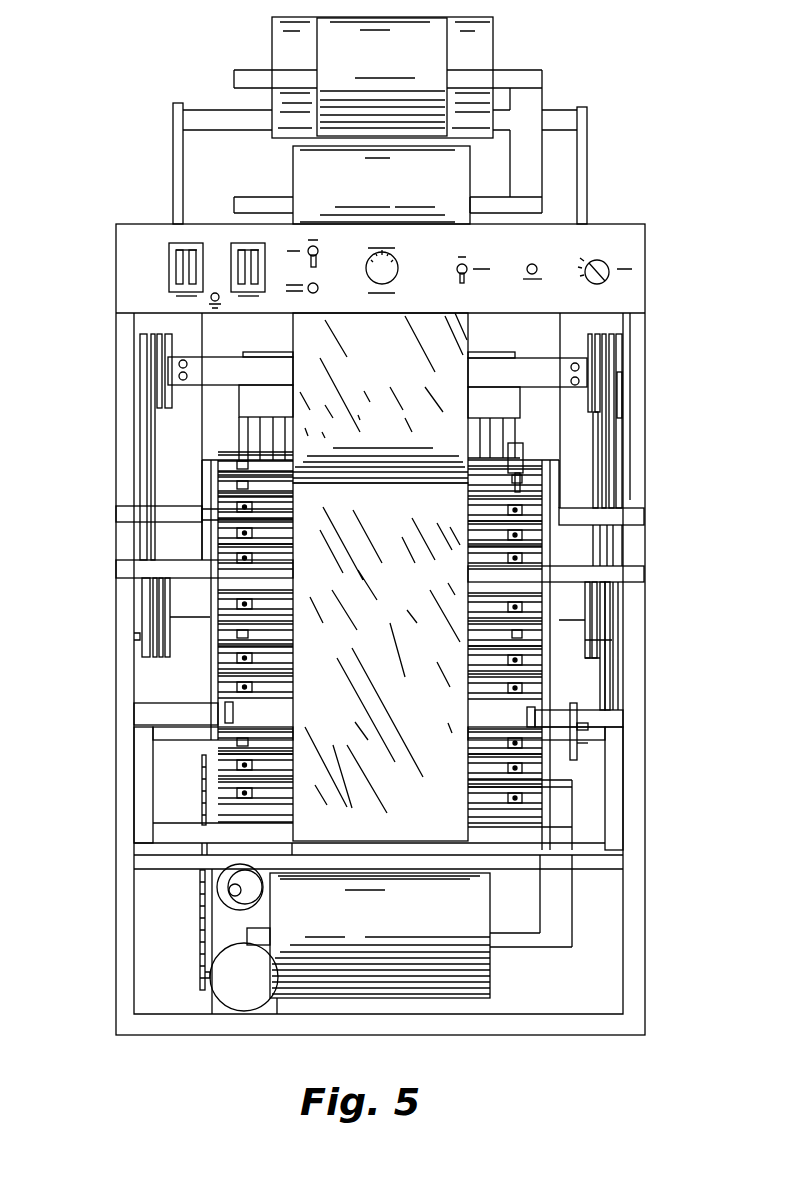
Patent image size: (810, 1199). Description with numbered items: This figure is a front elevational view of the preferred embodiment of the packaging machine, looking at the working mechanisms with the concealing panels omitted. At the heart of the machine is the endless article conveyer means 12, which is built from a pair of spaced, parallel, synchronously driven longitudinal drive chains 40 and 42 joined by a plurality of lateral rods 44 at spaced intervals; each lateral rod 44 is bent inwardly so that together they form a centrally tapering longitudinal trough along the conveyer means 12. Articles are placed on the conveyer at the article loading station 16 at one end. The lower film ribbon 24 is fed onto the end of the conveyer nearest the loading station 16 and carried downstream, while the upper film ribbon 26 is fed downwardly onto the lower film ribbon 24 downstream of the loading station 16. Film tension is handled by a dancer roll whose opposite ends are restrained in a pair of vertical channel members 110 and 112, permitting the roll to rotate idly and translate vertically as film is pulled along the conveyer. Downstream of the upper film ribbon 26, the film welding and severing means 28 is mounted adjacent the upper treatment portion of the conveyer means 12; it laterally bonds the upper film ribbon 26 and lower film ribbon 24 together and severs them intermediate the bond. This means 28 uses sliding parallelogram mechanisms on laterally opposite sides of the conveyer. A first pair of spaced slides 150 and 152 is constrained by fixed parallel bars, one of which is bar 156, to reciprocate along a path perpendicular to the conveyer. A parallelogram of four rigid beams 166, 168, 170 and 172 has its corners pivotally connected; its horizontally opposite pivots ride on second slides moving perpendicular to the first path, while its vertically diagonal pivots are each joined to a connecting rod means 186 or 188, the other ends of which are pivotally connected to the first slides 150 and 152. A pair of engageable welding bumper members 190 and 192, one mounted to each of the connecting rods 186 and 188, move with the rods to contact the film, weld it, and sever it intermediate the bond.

The endless article conveyer means 12 is at (223, 635).
The article loading station 16 is at (657, 297).
The lower film ribbon 24 is at (422, 808).
The upper film ribbon 26 is at (390, 372).
The film welding and severing means 28 is at (553, 372).
The longitudinal drive chain 40 is at (545, 690).
The longitudinal drive chain 42 is at (217, 748).
The lateral rods 44 is at (223, 672).
The vertical channel member 110 is at (143, 798).
The vertical channel member 112 is at (613, 797).
The first slide 150 is at (620, 392).
The first slide 152 is at (618, 602).
The fixed parallel bar 156 is at (613, 445).
The beam 166 is at (602, 428).
The beam 168 is at (600, 592).
The beam 170 is at (597, 627).
The beam 172 is at (595, 477).
The connecting rod means 186 is at (590, 367).
The connecting rod means 188 is at (587, 638).
The welding bumper member 190 is at (512, 386).
The welding bumper member 192 is at (573, 575).